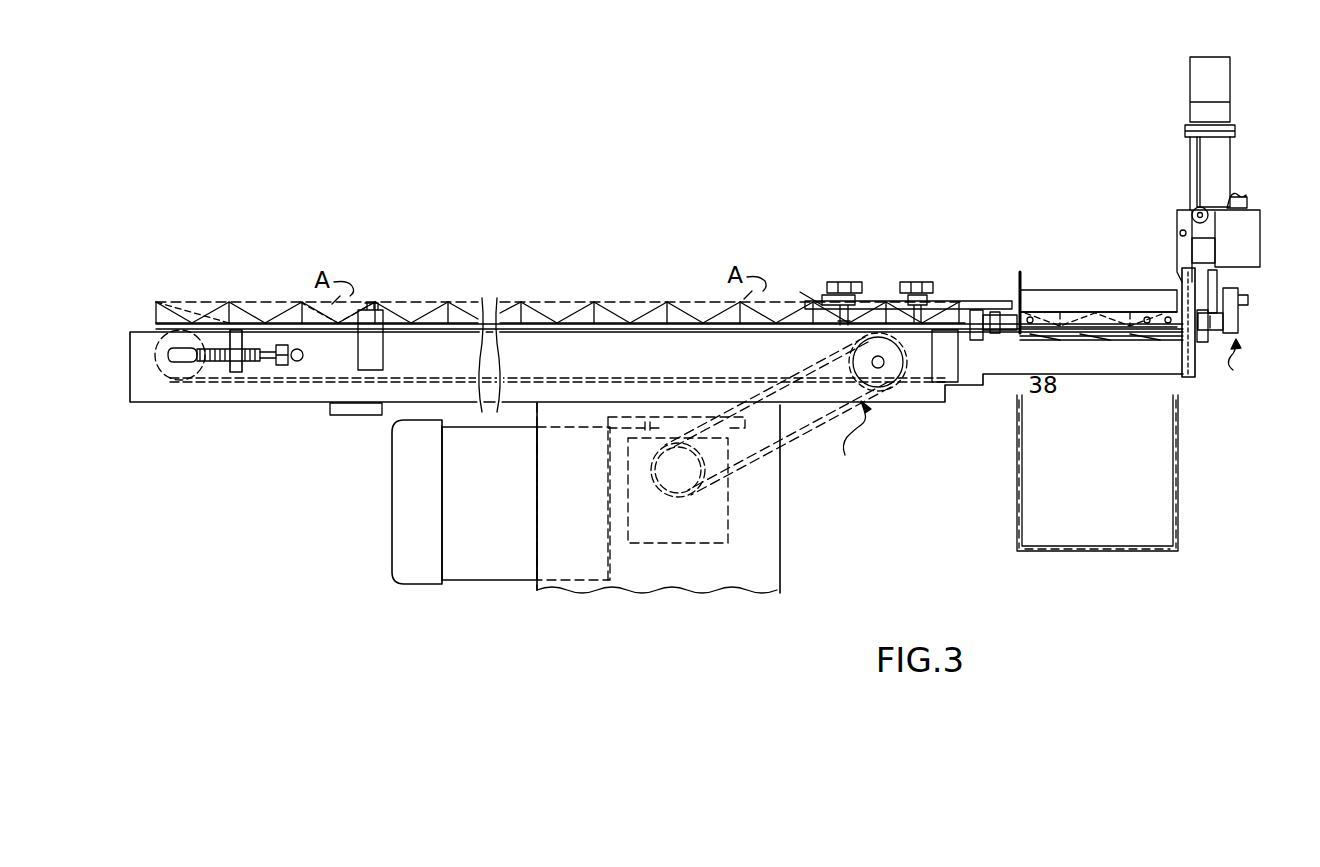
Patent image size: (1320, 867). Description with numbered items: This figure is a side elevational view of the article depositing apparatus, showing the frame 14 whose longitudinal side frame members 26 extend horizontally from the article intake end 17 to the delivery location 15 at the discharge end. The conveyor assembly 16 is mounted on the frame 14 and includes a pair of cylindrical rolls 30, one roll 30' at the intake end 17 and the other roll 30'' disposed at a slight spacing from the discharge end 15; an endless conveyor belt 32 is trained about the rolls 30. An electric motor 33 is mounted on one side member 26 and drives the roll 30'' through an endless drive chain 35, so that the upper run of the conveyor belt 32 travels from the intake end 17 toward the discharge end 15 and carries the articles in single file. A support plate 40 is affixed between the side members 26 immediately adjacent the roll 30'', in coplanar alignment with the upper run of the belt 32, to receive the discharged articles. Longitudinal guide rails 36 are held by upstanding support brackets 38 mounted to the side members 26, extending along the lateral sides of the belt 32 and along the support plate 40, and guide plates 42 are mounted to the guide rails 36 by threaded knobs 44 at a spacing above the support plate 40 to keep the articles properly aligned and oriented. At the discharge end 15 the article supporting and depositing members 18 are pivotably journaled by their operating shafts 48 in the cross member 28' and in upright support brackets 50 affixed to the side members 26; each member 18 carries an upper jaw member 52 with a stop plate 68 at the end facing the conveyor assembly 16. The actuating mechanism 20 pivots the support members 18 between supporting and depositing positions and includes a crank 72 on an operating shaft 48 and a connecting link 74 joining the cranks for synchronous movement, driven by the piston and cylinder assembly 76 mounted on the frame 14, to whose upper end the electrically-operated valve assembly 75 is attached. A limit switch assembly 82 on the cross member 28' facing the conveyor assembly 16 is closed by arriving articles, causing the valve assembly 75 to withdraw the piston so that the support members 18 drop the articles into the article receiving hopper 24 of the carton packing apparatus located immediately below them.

The frame 14 is at (258, 400).
The delivery location 15 is at (846, 348).
The conveyor assembly 16 is at (855, 430).
The article intake end 17 is at (190, 331).
The article supporting and depositing members 18 is at (1107, 333).
The actuating mechanism 20 is at (1242, 364).
The article receiving hopper 24 is at (1108, 544).
The longitudinal side frame members 26 is at (603, 367).
The cross member 28' is at (1206, 346).
The cylindrical rolls 30 is at (534, 387).
The roll 30' is at (142, 329).
The roll 30'' is at (966, 373).
The endless conveyor belt 32 is at (304, 336).
The electric motor 33 is at (469, 490).
The endless drive chain 35 is at (798, 440).
The longitudinal guide rails 36 is at (240, 312).
The upstanding support brackets 38 is at (375, 345).
The support plate 40 is at (1002, 330).
The guide plates 42 is at (952, 300).
The threaded knobs 44 is at (909, 292).
The operating shafts 48 is at (1011, 296).
The upright support brackets 50 is at (981, 310).
The upper jaw member 52 is at (1098, 303).
The stop plate 68 is at (1032, 317).
The crank 72 is at (1220, 303).
The connecting link 74 is at (1226, 312).
The valve assembly 75 is at (1198, 85).
The piston and cylinder assembly 76 is at (1226, 173).
The limit switch assembly 82 is at (1178, 272).